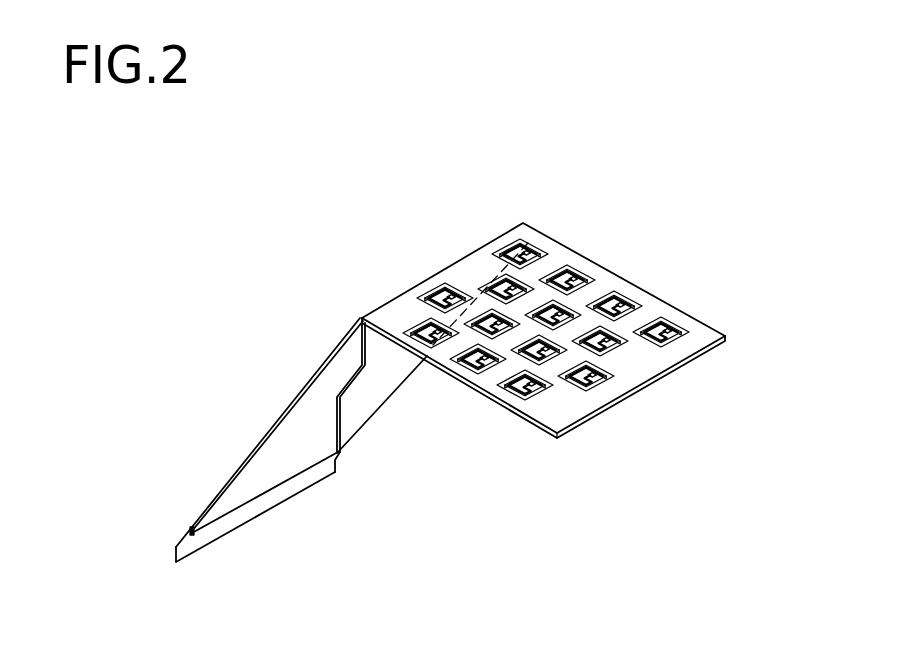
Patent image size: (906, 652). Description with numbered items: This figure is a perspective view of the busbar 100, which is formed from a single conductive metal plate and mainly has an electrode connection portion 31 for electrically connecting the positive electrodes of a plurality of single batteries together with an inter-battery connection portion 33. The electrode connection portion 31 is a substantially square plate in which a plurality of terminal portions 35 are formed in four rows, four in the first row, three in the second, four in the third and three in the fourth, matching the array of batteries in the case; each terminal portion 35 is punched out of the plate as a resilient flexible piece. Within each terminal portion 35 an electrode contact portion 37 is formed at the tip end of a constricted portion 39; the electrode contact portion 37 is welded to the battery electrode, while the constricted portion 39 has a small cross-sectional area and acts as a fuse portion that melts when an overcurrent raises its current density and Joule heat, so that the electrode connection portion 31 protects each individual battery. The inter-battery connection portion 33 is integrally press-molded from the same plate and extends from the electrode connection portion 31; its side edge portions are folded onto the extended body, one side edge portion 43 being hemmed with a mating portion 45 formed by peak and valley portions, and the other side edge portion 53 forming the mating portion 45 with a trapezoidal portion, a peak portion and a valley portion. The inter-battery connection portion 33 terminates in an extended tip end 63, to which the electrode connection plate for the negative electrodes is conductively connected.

The busbar 100 is at (452, 213).
The electrode connection portion 31 is at (678, 305).
The inter-battery connection portion 33 is at (292, 398).
The terminal portion 35 is at (647, 175).
The electrode contact portion 37 is at (553, 268).
The constricted portion 39 is at (580, 280).
The one side edge portion 43 is at (380, 397).
The mating portion 45 is at (345, 457).
The other side edge portion 53 is at (263, 472).
The extended tip end 63 is at (199, 547).